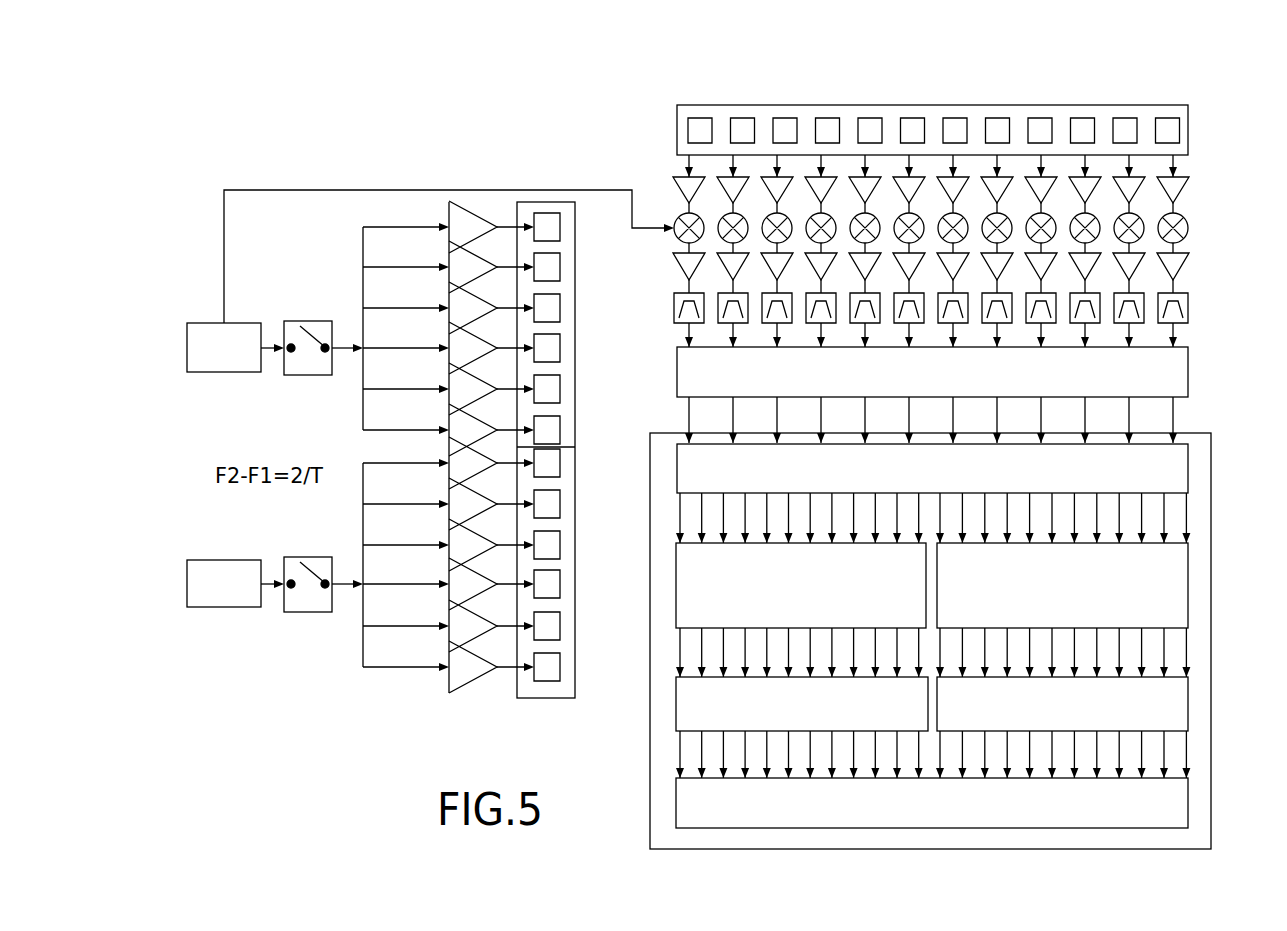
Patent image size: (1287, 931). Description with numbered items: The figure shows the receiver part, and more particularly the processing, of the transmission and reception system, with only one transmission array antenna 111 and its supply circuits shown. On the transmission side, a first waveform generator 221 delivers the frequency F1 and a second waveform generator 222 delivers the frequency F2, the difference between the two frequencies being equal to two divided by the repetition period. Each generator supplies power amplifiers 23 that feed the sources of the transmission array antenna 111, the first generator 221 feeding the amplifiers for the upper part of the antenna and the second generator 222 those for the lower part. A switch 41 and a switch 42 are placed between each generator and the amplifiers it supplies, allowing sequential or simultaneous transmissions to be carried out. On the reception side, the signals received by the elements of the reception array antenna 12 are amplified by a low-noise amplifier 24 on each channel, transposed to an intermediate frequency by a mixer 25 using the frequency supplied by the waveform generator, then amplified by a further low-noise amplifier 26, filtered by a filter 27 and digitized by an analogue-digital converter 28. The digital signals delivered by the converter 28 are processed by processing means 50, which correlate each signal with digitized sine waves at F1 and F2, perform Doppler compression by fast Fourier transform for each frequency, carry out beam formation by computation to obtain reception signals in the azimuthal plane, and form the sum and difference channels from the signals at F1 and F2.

The receiver array 12 is at (1020, 115).
The power amplifier 23 is at (460, 221).
The transmission array antenna 111 is at (550, 202).
The first waveform generator 221 is at (204, 323).
The second waveform generator 222 is at (222, 560).
The switch 41 is at (311, 376).
The switch 42 is at (311, 613).
The low-noise amplifier 24 is at (1186, 189).
The mixer 25 is at (1188, 235).
The low-noise amplifier 26 is at (1182, 273).
The filter 27 is at (1190, 309).
The analogue-digital converter 28 is at (1188, 365).
The processing means 50 is at (868, 850).